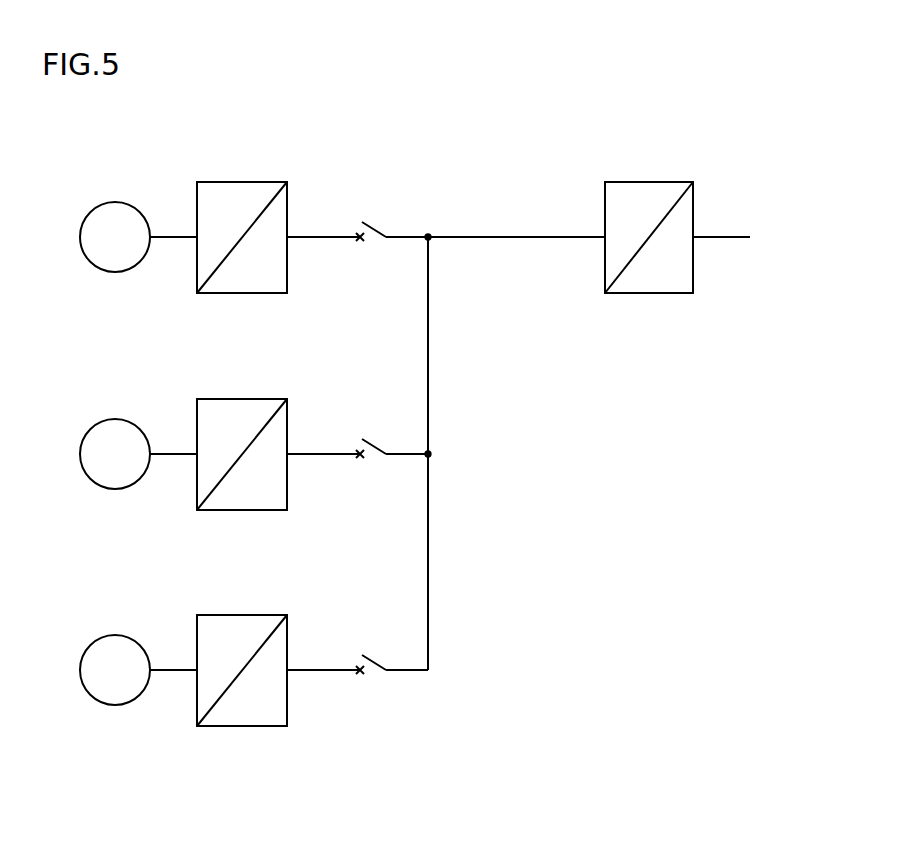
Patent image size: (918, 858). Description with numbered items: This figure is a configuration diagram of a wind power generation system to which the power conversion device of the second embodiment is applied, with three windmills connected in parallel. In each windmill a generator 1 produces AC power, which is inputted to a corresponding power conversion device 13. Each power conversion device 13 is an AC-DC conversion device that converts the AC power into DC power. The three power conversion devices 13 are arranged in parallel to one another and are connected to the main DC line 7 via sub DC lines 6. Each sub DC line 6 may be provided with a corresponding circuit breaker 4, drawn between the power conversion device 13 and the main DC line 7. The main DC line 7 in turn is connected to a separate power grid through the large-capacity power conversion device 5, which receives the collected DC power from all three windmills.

The generator 1 is at (116, 202).
The power conversion device 13 is at (236, 181).
The sub DC line 6 is at (311, 234).
The circuit breaker 4 is at (378, 222).
The main DC line 7 is at (508, 234).
The large-capacity power conversion device 5 is at (652, 181).